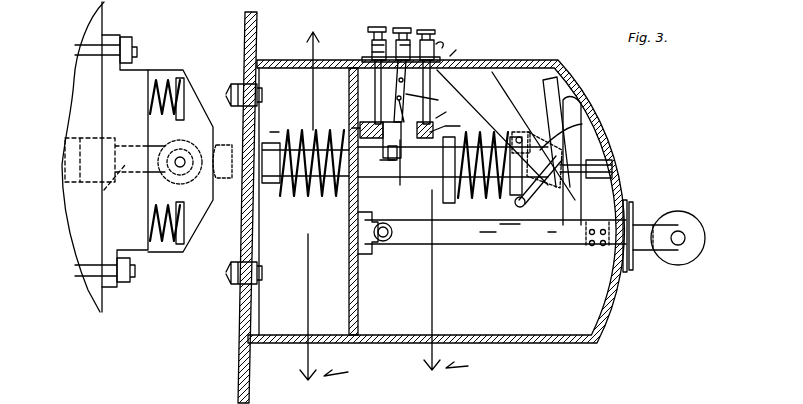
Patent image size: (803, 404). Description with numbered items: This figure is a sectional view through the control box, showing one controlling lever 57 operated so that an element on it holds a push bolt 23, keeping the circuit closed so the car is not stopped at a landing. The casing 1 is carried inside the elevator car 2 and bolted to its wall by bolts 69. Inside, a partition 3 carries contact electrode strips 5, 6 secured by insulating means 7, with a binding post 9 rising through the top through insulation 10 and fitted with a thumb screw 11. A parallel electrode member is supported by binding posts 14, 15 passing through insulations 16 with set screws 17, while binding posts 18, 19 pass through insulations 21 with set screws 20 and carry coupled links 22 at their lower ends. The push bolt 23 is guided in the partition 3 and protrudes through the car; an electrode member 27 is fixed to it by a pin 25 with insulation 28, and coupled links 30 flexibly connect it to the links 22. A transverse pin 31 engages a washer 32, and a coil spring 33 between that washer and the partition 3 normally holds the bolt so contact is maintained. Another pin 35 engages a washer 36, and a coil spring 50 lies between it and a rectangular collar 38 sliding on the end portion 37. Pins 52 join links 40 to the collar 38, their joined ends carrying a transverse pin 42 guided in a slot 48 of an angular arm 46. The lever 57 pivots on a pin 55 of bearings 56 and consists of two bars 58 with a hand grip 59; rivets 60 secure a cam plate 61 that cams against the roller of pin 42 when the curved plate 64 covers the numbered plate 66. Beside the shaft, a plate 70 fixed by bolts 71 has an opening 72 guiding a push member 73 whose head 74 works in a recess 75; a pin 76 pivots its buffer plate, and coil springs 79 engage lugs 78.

The casing 1 is at (494, 346).
The elevator car 2 is at (246, 26).
The partition 3 is at (359, 312).
The contact electrode strip 5 is at (446, 294).
The contact electrode strip 6 is at (352, 124).
The insulating means 7 is at (350, 130).
The binding post 9 is at (364, 58).
The insulation 10 is at (370, 60).
The thumb screw 11 is at (378, 26).
The binding post 14 is at (440, 66).
The binding post 15 is at (440, 58).
The insulation 16 is at (442, 48).
The set screw 17 is at (399, 22).
The binding post 18 is at (460, 62).
The binding post 19 is at (450, 113).
The set screw 20 is at (404, 30).
The insulation 21 is at (428, 30).
The coupled link 22 is at (440, 100).
The push bolt 23 is at (384, 180).
The pin 25 is at (372, 140).
The electrode member 27 is at (424, 140).
The insulation 28 is at (398, 150).
The coupled link 30 is at (495, 233).
The transverse pin 31 is at (274, 200).
The washer 32 is at (282, 134).
The coil spring 33 is at (310, 198).
The pin 35 is at (460, 126).
The washer 36 is at (518, 132).
The end portion 37 is at (586, 126).
The collar 38 is at (536, 134).
The link 40 is at (576, 118).
The transverse pin 42 is at (552, 235).
The arm 46 is at (606, 144).
The slot 48 is at (612, 166).
The coil spring 50 is at (500, 196).
The pin 52 is at (544, 82).
The pin 55 is at (392, 234).
The bearing 56 is at (378, 248).
The controlling lever 57 is at (514, 245).
The bar 58 is at (473, 245).
The hand grip 59 is at (706, 250).
The rivet 60 is at (603, 248).
The cam plate 61 is at (586, 196).
The curved plate 64 is at (632, 210).
The numbered plate 66 is at (632, 268).
The bolt 69 is at (240, 86).
The plate 70 is at (125, 161).
The bolt 71 is at (134, 46).
The opening 72 is at (102, 192).
The push member 73 is at (150, 175).
The head 74 is at (84, 136).
The recess 75 is at (66, 170).
The pin 76 is at (176, 156).
The lug 78 is at (180, 96).
The coil spring 79 is at (156, 84).